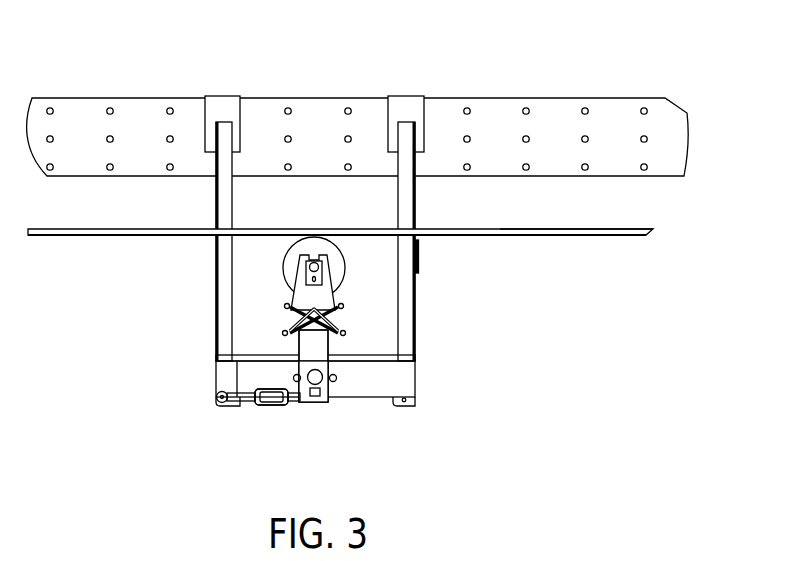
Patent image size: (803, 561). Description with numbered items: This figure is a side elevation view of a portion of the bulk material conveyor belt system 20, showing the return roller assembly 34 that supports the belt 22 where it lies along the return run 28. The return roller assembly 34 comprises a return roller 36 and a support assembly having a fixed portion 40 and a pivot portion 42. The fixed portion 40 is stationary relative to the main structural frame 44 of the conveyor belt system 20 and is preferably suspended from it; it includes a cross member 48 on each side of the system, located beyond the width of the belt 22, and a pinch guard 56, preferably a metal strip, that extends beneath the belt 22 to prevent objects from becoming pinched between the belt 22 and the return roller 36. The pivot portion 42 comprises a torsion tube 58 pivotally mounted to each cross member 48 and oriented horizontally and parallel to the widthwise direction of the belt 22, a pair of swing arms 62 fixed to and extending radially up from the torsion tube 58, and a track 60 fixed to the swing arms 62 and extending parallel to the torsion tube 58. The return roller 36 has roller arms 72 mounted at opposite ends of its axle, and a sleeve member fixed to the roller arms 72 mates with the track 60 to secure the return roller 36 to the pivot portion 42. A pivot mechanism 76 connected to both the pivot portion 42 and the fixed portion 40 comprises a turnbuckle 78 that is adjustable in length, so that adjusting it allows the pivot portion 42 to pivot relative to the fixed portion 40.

The bulk material conveyor belt system 20 is at (370, 68).
The belt 22 is at (554, 236).
The return run 28 is at (610, 236).
The return roller assembly 34 is at (224, 292).
The return roller 36 is at (290, 258).
The fixed portion 40 is at (390, 390).
The pivot portion 42 is at (320, 345).
The main structural frame 44 is at (496, 108).
The cross member 48 is at (398, 384).
The pinch guard 56 is at (419, 257).
The torsion tube 58 is at (322, 381).
The track 60 is at (288, 326).
The swing arms 62 is at (313, 366).
The roller arms 72 is at (335, 300).
The pivot mechanism 76 is at (265, 406).
The turnbuckle 78 is at (271, 397).